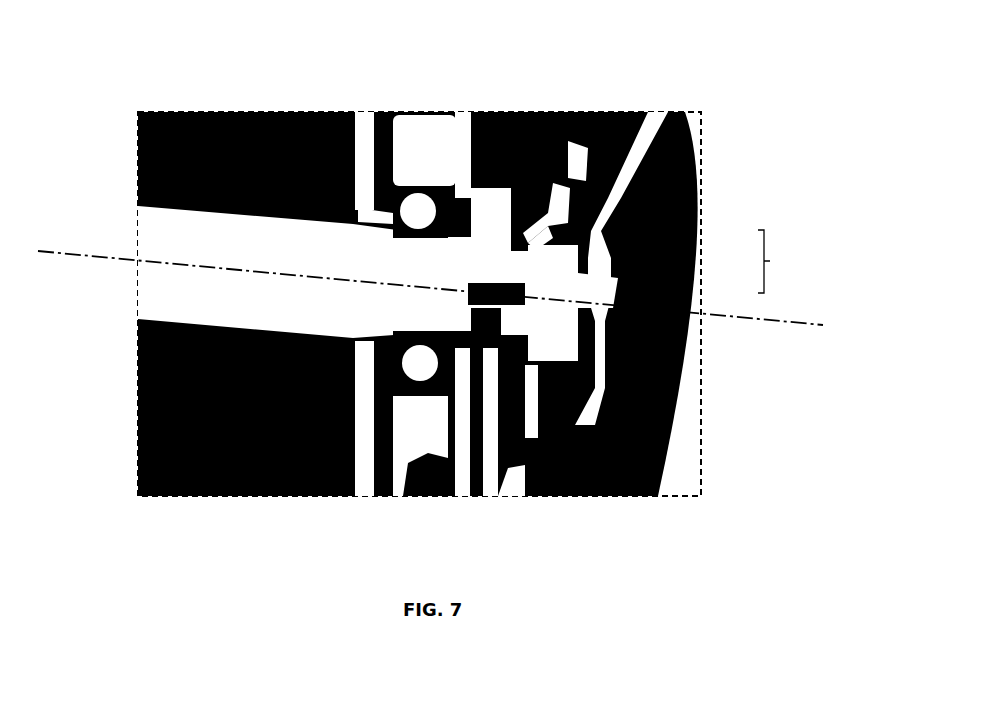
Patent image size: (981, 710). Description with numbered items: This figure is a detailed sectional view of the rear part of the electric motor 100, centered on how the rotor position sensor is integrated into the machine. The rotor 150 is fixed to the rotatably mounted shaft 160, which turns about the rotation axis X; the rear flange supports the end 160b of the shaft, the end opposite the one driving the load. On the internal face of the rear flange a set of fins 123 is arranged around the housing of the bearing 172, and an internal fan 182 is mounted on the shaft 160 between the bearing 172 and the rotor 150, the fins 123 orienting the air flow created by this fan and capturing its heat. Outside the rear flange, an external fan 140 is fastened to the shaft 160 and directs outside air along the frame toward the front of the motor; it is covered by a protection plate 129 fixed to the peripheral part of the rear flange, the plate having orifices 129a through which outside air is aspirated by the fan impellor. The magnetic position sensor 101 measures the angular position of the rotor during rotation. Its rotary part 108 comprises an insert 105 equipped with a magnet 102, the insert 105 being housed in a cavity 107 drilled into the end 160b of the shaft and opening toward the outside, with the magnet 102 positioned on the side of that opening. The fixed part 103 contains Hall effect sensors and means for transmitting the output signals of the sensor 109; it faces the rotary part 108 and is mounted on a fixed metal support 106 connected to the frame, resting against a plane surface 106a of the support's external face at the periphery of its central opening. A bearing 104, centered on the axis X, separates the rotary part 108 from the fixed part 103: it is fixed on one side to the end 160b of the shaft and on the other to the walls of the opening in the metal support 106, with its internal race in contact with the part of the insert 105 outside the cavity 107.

The electric motor 100 is at (138, 82).
The rotor 150 is at (163, 178).
The rotatably mounted shaft 160 is at (165, 284).
The end of the rotation shaft 160b is at (343, 333).
The fins 123 is at (398, 110).
The bearing 172 is at (420, 390).
The internal fan 182 is at (365, 458).
The external fan 140 is at (500, 118).
The cavity 107 is at (473, 298).
The fixed part 103 is at (557, 322).
The insert 105 is at (507, 265).
The magnet 102 is at (513, 287).
The rotary part 108 is at (786, 261).
The fixed metal support 106 is at (545, 190).
The plane surface 106a is at (522, 235).
The magnetic position sensor 101 is at (572, 308).
The sensor 109 is at (636, 125).
The protection plate 129 is at (603, 112).
The orifices 129a is at (590, 380).
The bearing 104 is at (553, 320).
The rotation axis X is at (430, 288).